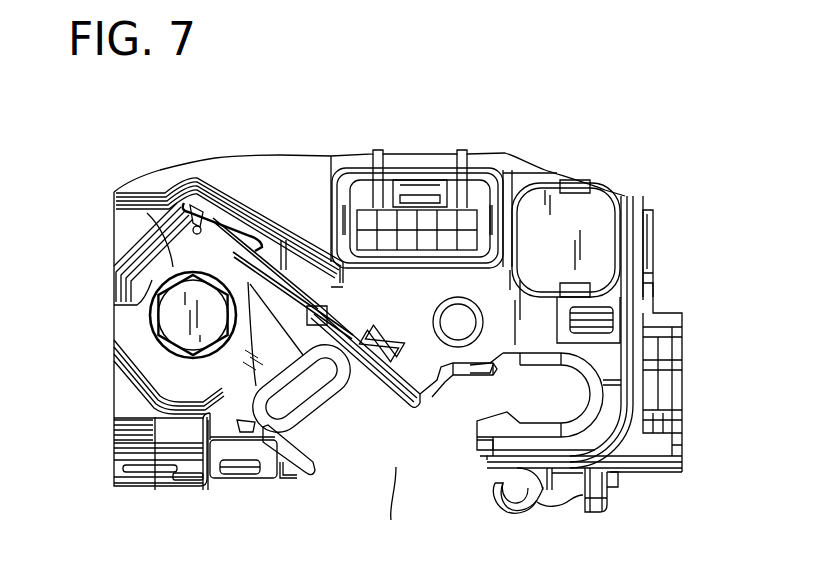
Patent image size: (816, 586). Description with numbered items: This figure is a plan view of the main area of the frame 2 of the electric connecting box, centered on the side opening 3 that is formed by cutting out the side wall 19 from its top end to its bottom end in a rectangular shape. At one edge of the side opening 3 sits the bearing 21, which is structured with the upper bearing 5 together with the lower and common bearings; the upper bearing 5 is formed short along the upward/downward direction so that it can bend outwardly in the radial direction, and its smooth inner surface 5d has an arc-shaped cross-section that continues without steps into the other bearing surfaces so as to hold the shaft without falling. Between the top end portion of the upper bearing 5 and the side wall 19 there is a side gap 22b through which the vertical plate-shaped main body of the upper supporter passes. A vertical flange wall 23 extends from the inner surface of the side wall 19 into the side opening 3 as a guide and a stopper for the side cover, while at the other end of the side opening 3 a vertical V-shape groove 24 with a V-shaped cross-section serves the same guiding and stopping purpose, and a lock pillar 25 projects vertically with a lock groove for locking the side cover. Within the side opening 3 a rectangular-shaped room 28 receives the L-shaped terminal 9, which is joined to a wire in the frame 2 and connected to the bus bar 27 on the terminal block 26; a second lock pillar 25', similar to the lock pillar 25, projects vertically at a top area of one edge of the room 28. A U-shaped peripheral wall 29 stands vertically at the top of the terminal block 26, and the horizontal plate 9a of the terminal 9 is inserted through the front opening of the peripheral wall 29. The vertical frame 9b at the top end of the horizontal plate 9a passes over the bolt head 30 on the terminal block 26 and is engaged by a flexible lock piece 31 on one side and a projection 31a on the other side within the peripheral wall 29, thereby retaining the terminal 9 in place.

The frame 2 is at (690, 137).
The side opening 3 is at (389, 510).
The upper bearing 5 is at (490, 490).
The inner surface of upper bearing 5d is at (520, 490).
The terminal 9 is at (217, 400).
The horizontal plate 9a is at (262, 258).
The vertical frame 9b is at (163, 235).
The side wall 19 is at (607, 483).
The bearing 21 is at (589, 528).
The side gap 22b is at (493, 477).
The vertical flange wall 23 is at (477, 457).
The vertical V-shape groove 24 is at (293, 478).
The lock pillar 25 is at (240, 501).
The lock pillar 25' is at (398, 322).
The terminal block 26 is at (207, 445).
The bus bar 27 is at (183, 395).
The room 28 is at (310, 440).
The U-shaped peripheral wall 29 is at (257, 208).
The bolt head 30 is at (190, 298).
The flexible lock piece 31 is at (218, 224).
The projection 31a is at (200, 222).